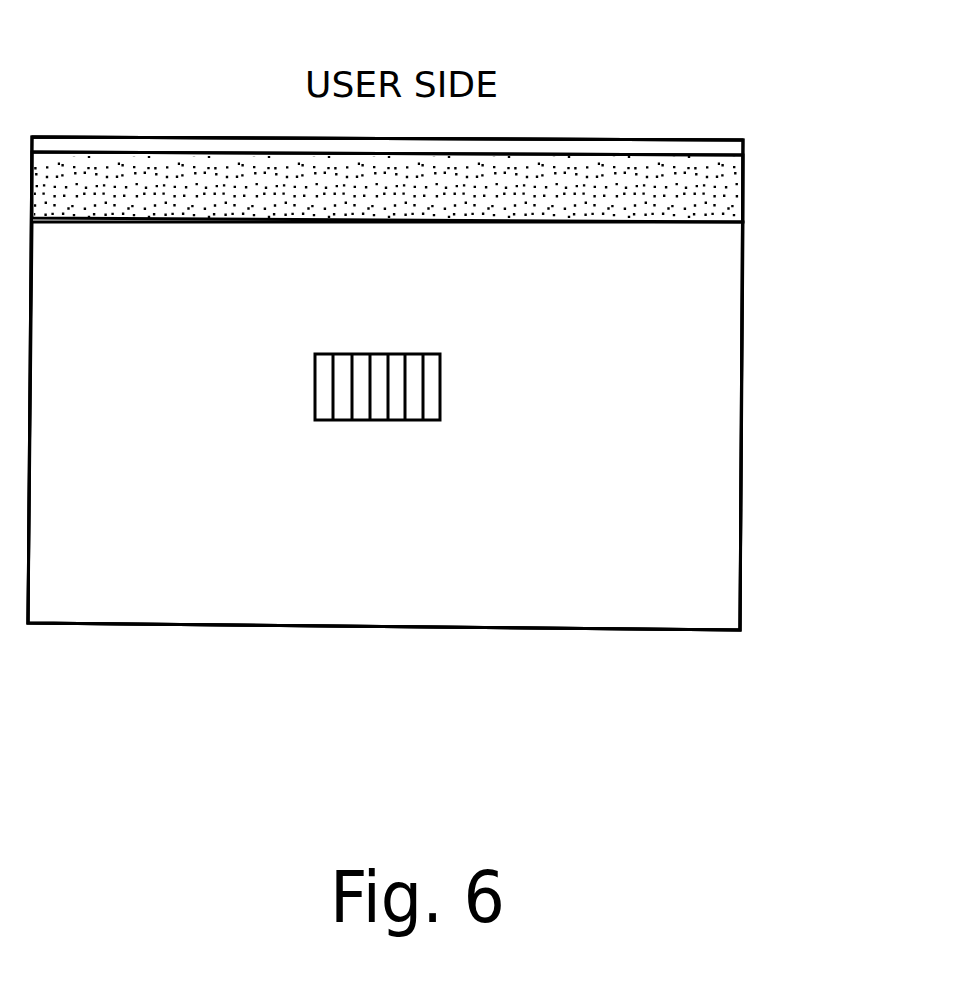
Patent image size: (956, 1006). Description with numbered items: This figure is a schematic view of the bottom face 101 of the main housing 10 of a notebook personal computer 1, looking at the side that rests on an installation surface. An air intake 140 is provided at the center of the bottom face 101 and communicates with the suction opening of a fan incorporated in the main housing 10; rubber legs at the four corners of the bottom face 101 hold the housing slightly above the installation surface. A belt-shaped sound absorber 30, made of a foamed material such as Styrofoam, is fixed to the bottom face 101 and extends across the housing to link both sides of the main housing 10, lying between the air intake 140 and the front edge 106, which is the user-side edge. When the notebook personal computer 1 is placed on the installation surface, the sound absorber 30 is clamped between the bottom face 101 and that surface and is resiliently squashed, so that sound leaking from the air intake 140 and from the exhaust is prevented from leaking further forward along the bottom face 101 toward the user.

The notebook personal computer 1 is at (757, 112).
The main housing 10 is at (745, 299).
The bottom face 101 is at (705, 458).
The front edge 106 is at (97, 136).
The belt-shaped sound absorber 30 is at (733, 197).
The air intake 140 is at (378, 420).